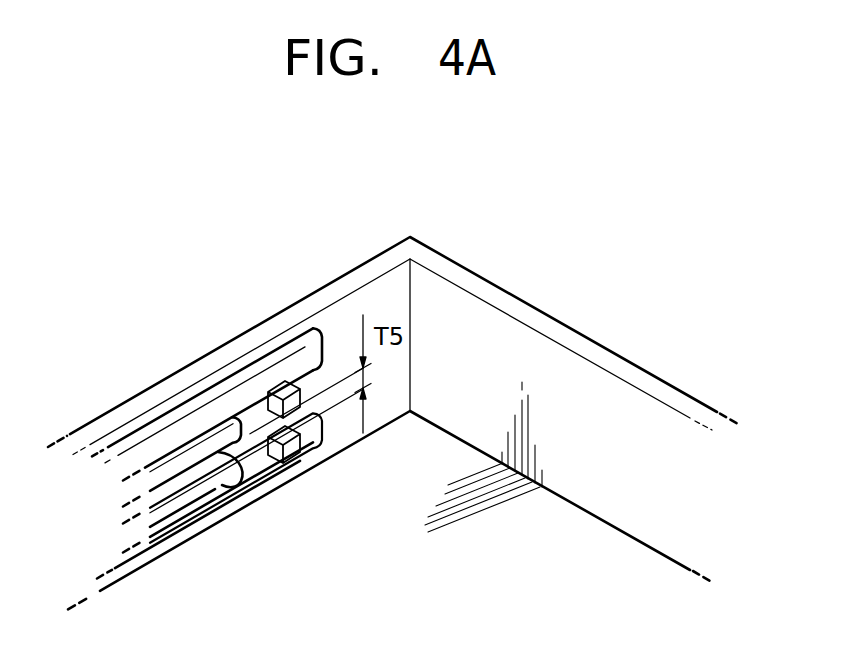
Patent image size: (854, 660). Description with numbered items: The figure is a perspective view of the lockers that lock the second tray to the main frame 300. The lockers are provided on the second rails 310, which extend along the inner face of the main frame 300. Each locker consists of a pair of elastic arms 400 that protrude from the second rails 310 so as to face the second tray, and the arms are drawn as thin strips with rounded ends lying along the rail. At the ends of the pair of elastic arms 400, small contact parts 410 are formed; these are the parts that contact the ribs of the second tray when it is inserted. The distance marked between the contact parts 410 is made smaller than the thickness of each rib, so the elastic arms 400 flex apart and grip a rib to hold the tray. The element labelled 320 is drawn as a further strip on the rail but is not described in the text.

The main frame 300 is at (477, 297).
The second rails 310 is at (197, 394).
The strip 320 is at (176, 461).
The elastic arms 400 is at (324, 350).
The contact parts 410 is at (284, 392).